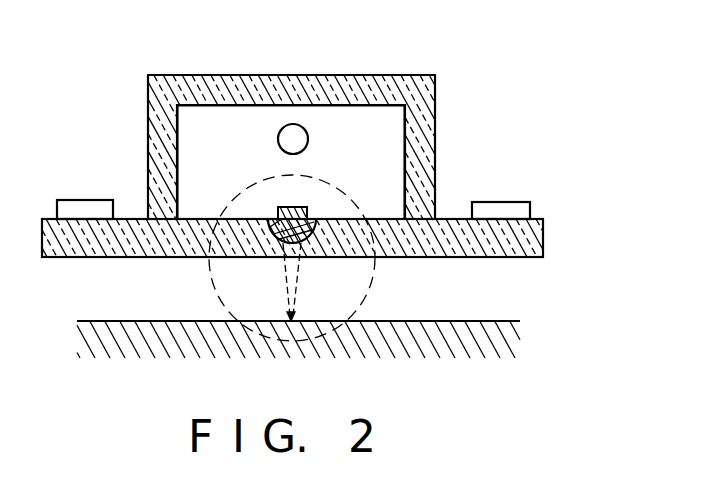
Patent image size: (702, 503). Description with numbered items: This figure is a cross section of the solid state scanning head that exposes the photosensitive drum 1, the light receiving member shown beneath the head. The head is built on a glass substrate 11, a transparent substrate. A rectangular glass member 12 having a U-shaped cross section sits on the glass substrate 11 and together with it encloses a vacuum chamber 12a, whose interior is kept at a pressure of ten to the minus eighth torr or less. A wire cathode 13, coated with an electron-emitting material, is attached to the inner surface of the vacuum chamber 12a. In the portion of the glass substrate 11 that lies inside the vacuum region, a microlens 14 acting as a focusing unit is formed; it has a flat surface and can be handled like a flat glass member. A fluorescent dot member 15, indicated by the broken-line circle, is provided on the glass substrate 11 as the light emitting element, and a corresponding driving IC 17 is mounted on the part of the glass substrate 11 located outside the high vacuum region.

The photosensitive drum 1 is at (138, 320).
The glass substrate 11 is at (545, 233).
The rectangular glass member 12 is at (343, 75).
The vacuum chamber 12a is at (380, 118).
The wire cathode 13 is at (285, 125).
The microlens 14 is at (318, 235).
The fluorescent dot member 15 is at (329, 206).
The driving IC 17 is at (88, 200).